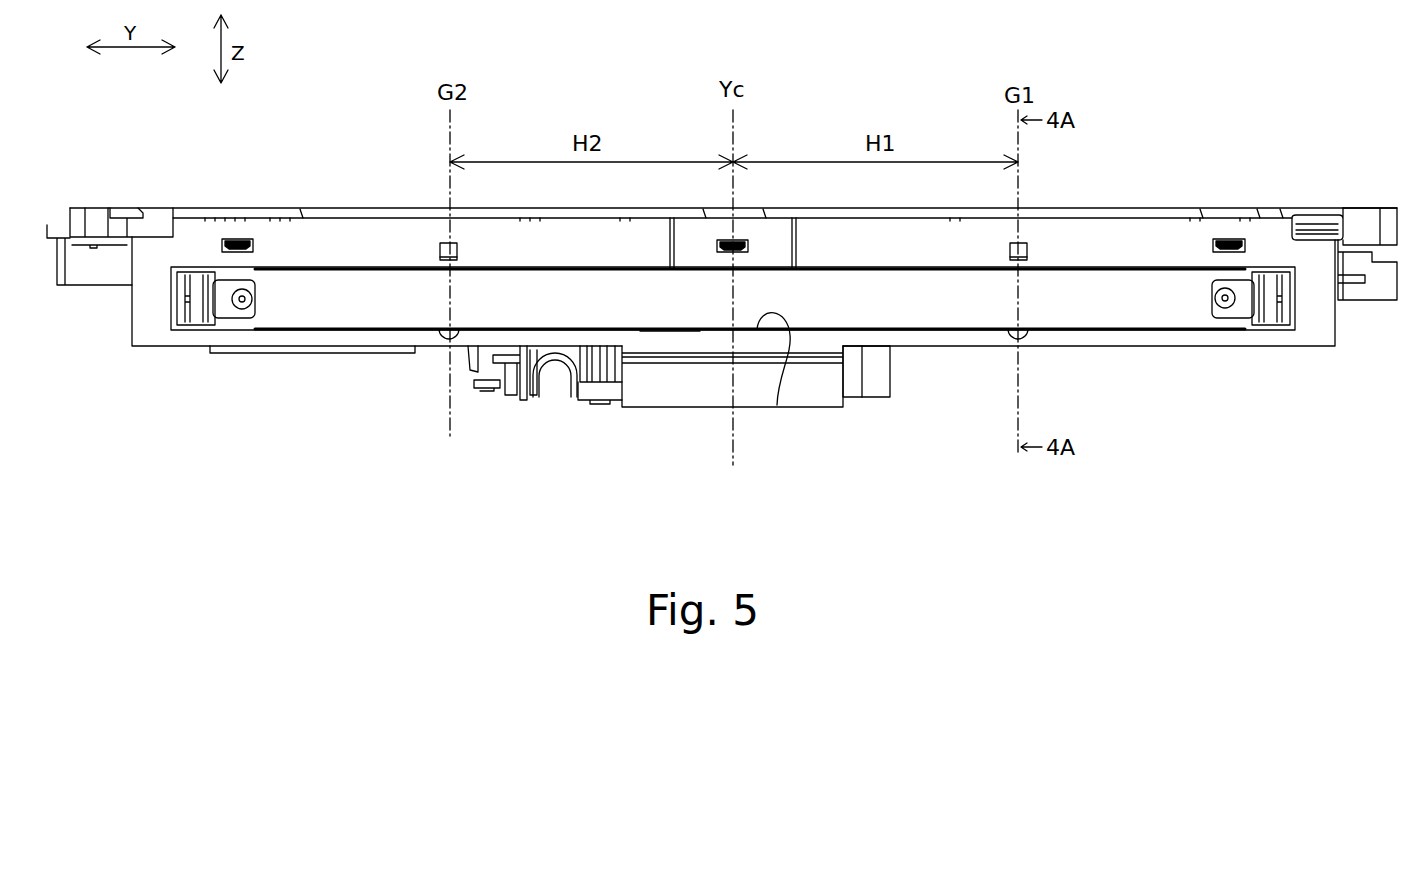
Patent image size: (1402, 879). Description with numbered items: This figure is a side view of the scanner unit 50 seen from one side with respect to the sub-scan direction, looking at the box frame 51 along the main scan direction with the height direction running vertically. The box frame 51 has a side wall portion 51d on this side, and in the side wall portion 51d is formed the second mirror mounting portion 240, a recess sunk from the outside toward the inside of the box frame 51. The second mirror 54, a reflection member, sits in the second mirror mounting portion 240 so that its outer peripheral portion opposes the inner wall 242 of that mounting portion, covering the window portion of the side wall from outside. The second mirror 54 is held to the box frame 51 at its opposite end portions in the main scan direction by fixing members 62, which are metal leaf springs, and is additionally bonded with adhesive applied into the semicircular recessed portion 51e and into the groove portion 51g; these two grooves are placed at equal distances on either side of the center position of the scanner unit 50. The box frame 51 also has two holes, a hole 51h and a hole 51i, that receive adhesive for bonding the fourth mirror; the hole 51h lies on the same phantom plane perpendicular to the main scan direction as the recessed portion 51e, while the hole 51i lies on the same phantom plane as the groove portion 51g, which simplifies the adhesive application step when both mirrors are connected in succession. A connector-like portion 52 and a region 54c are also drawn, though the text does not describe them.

The scanner unit 50 is at (1219, 186).
The box frame 51 is at (952, 347).
The side wall portion 51d is at (295, 245).
The recessed portion 51e is at (1025, 338).
The groove portion 51g is at (435, 341).
The hole 51h is at (1027, 250).
The hole 51i is at (440, 251).
The connector portion 52 is at (1356, 211).
The second mirror 54 is at (383, 300).
The lower portion of image sensor board 54c is at (660, 331).
The fixing member 62 is at (228, 322).
The second mirror mounting portion 240 is at (820, 332).
The inner wall 242 is at (777, 405).